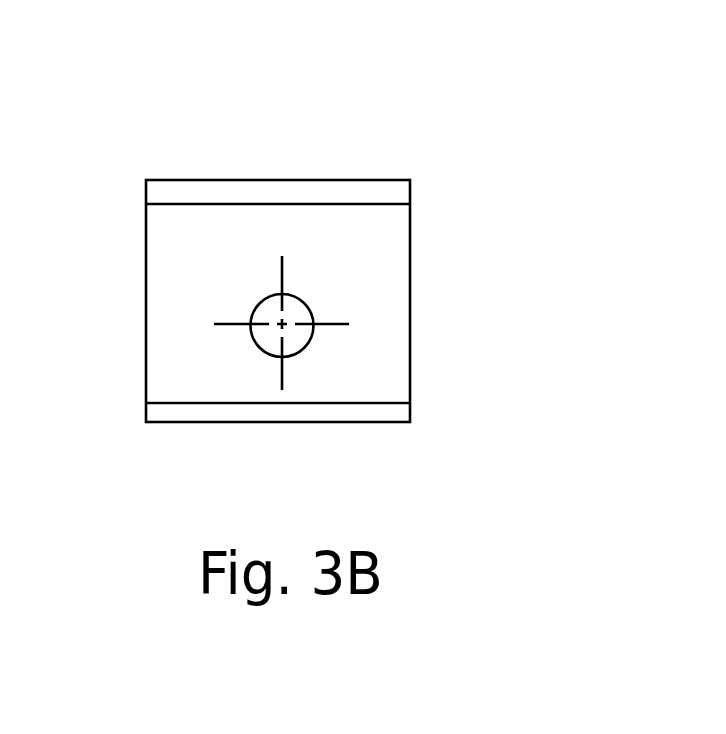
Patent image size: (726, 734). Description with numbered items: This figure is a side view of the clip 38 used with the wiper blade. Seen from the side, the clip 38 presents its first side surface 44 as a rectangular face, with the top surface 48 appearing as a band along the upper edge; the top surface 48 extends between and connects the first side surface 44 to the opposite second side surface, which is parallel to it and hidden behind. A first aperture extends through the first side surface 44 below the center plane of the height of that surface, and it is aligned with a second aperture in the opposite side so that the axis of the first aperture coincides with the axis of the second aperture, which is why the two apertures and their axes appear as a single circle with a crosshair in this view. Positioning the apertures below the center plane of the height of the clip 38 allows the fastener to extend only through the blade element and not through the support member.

The clip 38 is at (186, 123).
The first side surface 44 is at (388, 285).
The top surface 48 is at (291, 166).